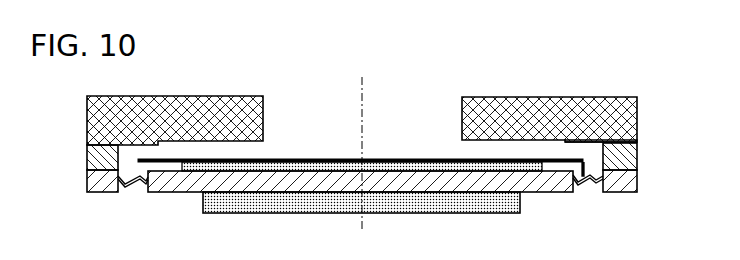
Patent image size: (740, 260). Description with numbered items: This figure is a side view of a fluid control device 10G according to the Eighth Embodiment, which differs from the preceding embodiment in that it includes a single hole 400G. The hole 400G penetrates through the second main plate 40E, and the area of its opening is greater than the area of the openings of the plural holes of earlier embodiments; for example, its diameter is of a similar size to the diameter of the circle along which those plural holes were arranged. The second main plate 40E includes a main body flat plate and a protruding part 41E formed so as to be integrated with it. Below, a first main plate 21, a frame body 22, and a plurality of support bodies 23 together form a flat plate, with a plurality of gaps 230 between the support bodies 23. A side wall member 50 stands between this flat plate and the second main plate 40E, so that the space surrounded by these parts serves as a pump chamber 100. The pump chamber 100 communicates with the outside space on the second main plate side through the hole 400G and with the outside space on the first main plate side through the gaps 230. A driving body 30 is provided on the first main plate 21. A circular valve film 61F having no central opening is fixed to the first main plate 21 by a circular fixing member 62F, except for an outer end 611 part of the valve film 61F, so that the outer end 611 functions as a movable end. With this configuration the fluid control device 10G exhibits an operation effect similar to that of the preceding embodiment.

The fluid control device 10G is at (618, 70).
The hole 400G is at (452, 102).
The second main plate 40E is at (637, 112).
The protruding part 41E is at (637, 138).
The side wall member 50 is at (637, 153).
The frame body 22 is at (637, 182).
The first main plate 21 is at (393, 178).
The support bodies 23 is at (383, 211).
The gaps 230 is at (597, 185).
The driving body 30 is at (433, 207).
The pump chamber 100 is at (364, 156).
The valve film 61F is at (364, 148).
The outer end 611 is at (583, 178).
The fixing member 62F is at (503, 163).